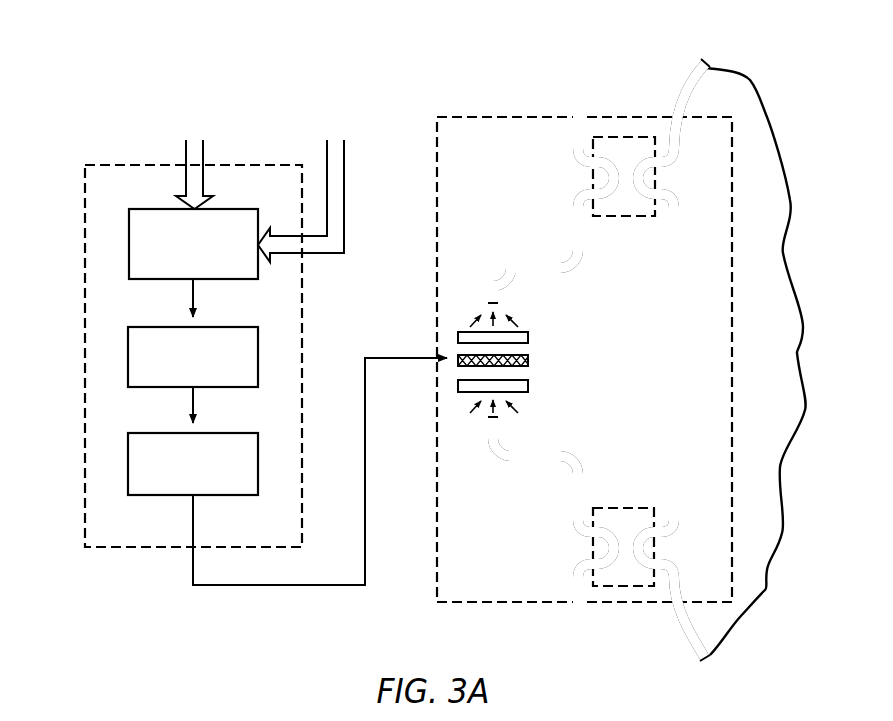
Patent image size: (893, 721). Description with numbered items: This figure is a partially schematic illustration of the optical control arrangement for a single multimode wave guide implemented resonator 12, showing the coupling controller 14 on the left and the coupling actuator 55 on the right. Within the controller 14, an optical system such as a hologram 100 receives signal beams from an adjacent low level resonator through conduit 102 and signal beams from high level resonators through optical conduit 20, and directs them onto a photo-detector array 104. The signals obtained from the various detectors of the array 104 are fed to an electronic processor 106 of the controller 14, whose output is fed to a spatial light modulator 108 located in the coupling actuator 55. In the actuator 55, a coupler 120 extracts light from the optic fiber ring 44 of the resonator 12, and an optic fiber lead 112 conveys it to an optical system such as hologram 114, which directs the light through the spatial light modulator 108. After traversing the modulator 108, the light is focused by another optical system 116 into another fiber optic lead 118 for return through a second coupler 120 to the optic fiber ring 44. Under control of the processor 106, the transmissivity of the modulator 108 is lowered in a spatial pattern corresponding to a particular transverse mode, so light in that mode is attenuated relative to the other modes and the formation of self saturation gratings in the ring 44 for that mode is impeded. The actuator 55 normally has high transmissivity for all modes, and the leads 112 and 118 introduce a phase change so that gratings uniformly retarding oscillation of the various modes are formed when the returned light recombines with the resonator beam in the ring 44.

The resonator 12 is at (775, 117).
The coupling controller 14 is at (81, 194).
The optical conduit 20 is at (327, 171).
The optic fiber ring 44 is at (677, 96).
The coupling actuator 55 is at (520, 112).
The hologram 100 is at (129, 253).
The conduit 102 is at (185, 151).
The photo-detector array 104 is at (128, 362).
The electronic processor 106 is at (128, 481).
The spatial light modulator 108 is at (470, 368).
The optic fiber lead 112 is at (537, 460).
The hologram 114 is at (518, 385).
The optical system 116 is at (520, 337).
The fiber optic lead 118 is at (537, 263).
The coupler 120 is at (634, 128).